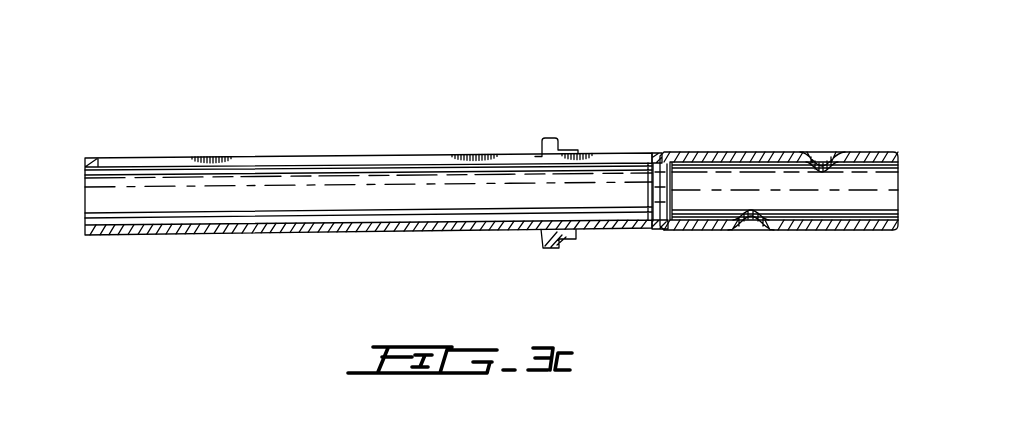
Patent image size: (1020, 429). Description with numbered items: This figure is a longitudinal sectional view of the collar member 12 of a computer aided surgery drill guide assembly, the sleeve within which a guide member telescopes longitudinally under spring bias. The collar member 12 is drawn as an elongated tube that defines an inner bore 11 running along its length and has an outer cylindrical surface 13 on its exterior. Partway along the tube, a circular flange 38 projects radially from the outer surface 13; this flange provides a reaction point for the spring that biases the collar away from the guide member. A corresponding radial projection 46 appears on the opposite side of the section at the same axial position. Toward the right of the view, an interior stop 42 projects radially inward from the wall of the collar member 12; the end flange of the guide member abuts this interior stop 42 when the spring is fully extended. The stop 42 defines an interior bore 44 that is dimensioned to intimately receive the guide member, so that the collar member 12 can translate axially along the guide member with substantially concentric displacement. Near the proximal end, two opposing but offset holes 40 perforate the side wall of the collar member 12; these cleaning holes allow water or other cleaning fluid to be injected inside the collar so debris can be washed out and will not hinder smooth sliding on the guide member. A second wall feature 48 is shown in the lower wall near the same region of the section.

The collar member 12 is at (277, 126).
The inner bore 11 is at (188, 226).
The outer cylindrical surface 13 is at (298, 236).
The circular flange 38 is at (550, 136).
The lower flange projection 46 is at (572, 238).
The interior stop 42 is at (656, 229).
The interior bore 44 is at (700, 178).
The holes 40 is at (820, 160).
The lower groove 48 is at (824, 222).